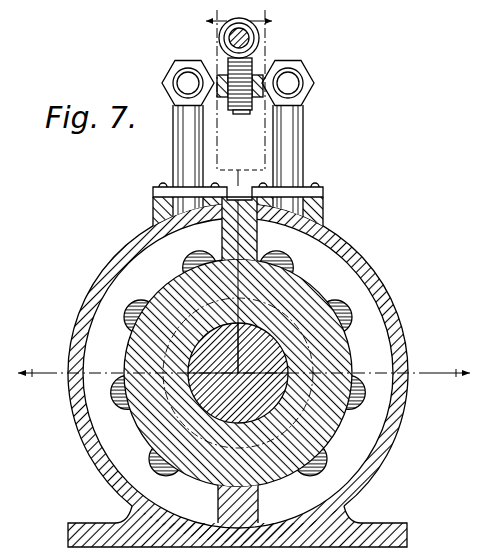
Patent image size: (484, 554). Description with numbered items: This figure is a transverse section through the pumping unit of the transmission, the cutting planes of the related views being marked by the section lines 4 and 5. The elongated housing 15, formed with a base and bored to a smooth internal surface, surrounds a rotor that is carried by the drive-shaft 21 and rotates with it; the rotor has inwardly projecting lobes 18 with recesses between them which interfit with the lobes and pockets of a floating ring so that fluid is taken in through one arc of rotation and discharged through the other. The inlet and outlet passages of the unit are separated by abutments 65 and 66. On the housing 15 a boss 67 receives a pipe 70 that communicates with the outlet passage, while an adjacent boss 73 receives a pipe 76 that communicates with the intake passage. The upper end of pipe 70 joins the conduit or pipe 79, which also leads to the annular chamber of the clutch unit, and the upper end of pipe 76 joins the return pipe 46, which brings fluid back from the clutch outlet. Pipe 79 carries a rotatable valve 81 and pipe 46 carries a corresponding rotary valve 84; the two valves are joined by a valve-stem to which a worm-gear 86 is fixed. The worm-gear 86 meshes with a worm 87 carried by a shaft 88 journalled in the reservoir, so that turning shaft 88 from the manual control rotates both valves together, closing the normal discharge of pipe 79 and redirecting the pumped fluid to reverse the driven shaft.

The section line 4 is at (224, 208).
The section line 5 is at (360, 208).
The housing 15 is at (401, 322).
The lobes 18 is at (298, 274).
The drive-shaft 21 is at (193, 400).
The return pipe 46 is at (303, 100).
The abutment 65 is at (258, 234).
The abutment 66 is at (258, 509).
The boss 67 is at (153, 205).
The pipe 70 is at (183, 152).
The boss 73 is at (323, 198).
The pipe 76 is at (303, 158).
The conduit or pipe 79 is at (179, 94).
The rotatable valve 81 is at (178, 67).
The rotary valve 84 is at (306, 76).
The worm-gear 86 is at (242, 115).
The worm 87 is at (262, 37).
The shaft 88 is at (245, 28).